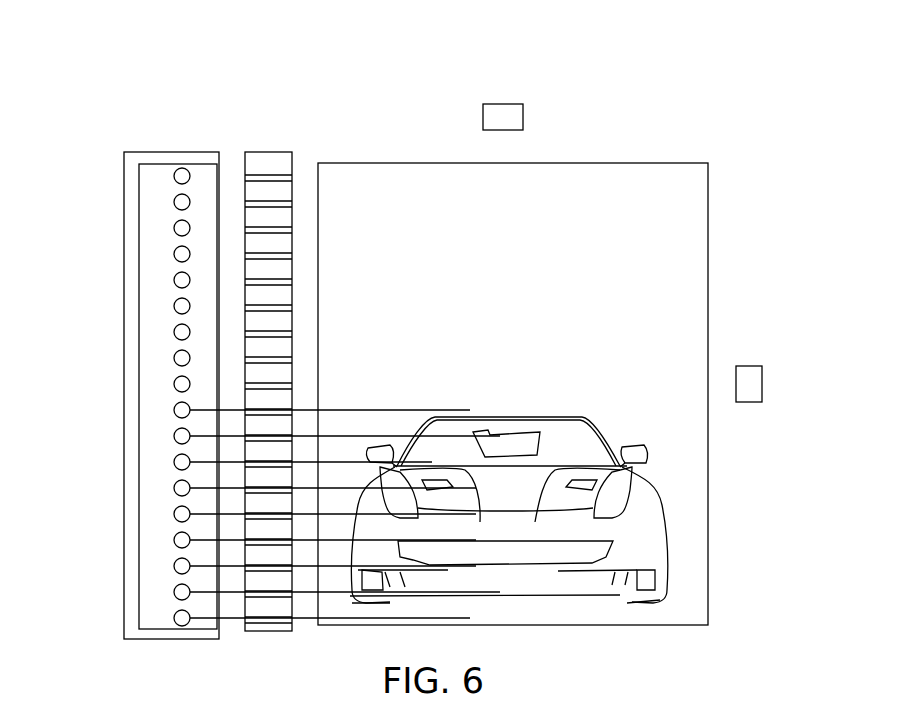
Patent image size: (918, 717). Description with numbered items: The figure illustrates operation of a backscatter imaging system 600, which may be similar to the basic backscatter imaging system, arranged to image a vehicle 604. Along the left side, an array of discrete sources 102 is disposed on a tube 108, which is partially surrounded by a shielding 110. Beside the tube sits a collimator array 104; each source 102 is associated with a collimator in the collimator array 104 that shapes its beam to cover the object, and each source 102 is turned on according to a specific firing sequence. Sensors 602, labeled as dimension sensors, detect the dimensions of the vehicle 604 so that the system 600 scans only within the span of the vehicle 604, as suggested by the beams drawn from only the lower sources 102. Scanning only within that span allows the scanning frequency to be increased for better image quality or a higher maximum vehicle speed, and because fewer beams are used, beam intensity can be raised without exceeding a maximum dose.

The system 600 is at (120, 97).
The discrete sources 102 is at (174, 175).
The collimator array 104 is at (277, 152).
The tube 108 is at (139, 221).
The shielding 110 is at (124, 261).
The sensors 602 is at (517, 104).
The vehicle 604 is at (517, 480).